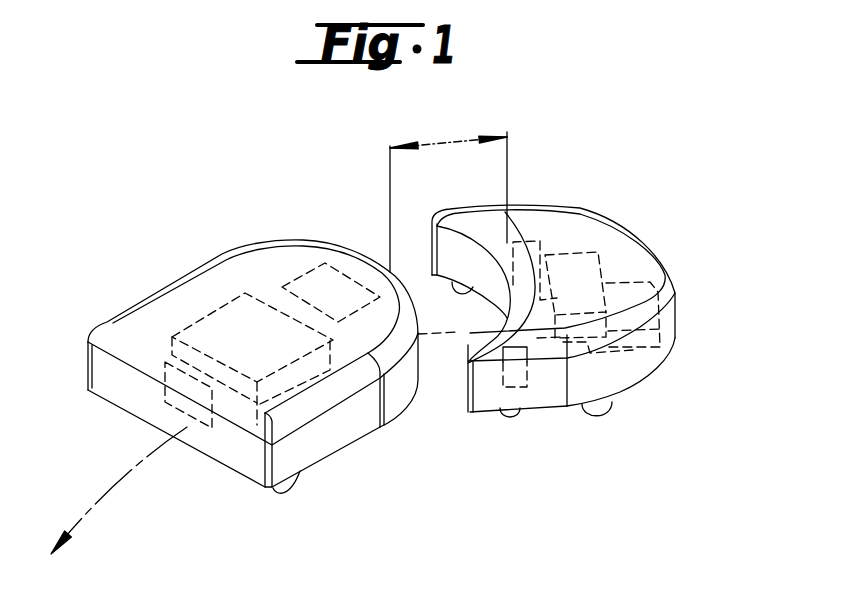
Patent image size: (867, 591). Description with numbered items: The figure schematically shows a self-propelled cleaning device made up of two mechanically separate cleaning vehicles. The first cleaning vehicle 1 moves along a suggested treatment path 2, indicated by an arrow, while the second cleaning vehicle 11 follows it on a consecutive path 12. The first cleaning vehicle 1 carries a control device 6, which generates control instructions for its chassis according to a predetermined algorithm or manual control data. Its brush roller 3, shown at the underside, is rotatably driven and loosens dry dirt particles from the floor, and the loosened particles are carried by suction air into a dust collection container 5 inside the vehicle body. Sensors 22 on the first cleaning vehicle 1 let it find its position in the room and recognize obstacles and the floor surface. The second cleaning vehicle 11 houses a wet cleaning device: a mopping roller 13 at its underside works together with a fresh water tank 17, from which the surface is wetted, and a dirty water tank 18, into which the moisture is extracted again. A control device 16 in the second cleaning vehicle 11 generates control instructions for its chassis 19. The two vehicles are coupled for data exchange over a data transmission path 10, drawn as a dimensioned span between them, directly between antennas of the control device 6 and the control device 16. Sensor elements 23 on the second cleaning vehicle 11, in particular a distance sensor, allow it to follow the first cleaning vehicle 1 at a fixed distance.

The first cleaning vehicle 1 is at (230, 268).
The treatment path 2 is at (97, 501).
The brush roller 3 is at (287, 488).
The dust collection container 5 is at (217, 332).
The control device 6 is at (332, 278).
The data transmission path 10 is at (449, 143).
The second cleaning vehicle 11 is at (602, 217).
The consecutive path 12 is at (456, 336).
The mopping roller 13 is at (591, 415).
The control device 16 is at (532, 240).
The fresh water tank 17 is at (570, 243).
The dirty water tank 18 is at (647, 322).
The chassis 19 is at (456, 281).
The sensors 22 is at (193, 408).
The sensor elements 23 is at (517, 380).